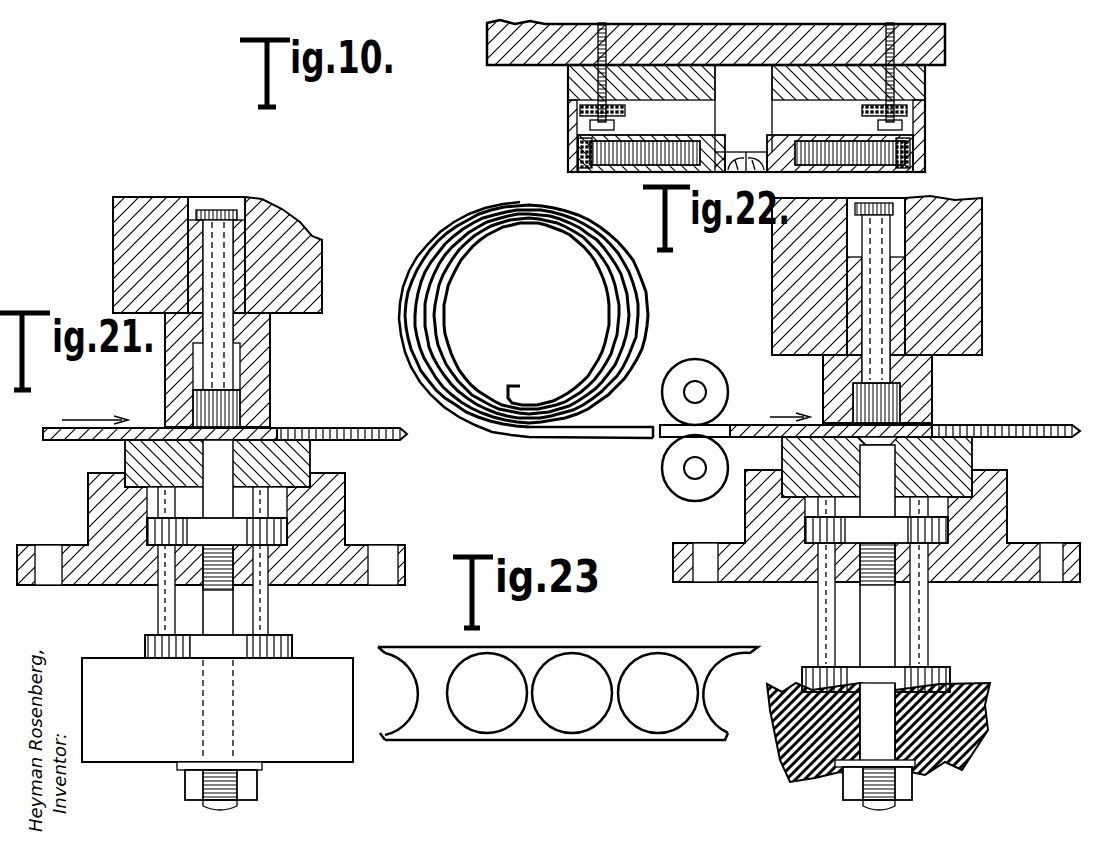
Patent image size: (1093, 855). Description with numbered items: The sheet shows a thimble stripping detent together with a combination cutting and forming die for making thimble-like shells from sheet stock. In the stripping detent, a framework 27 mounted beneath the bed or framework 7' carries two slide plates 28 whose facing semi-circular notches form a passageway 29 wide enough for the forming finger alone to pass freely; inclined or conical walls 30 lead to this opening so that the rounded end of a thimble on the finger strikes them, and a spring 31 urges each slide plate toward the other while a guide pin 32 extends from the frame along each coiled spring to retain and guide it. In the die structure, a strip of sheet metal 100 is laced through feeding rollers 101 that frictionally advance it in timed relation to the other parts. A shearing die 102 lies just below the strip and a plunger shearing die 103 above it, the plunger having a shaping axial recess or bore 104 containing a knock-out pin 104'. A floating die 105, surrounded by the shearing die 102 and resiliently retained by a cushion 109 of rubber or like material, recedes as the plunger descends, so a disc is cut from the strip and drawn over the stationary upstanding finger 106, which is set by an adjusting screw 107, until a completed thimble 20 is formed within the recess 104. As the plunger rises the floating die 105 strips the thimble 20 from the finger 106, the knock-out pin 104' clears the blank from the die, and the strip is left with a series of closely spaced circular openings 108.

In FIG. 10, the bed or framework 7' is at (734, 42).
In FIG. 10, the framework 27 is at (910, 108).
In FIG. 10, the slide plates 28 is at (735, 172).
In FIG. 10, the passageway or opening 29 is at (740, 152).
In FIG. 10, the inclined or conical walls 30 is at (750, 152).
In FIG. 10, the spring 31 is at (600, 170).
In FIG. 10, the guide pin 32 is at (575, 170).
In FIG. 21, the strip of sheet metal 100 is at (52, 430).
In FIG. 22, the strip of sheet metal 100 is at (652, 278).
In FIG. 23, the strip of sheet metal 100 is at (532, 653).
In FIG. 22, the feeding rollers 101 is at (712, 398).
In FIG. 21, the shearing die 102 is at (295, 478).
In FIG. 22, the shearing die 102 is at (965, 480).
In FIG. 21, the plunger shearing die 103 is at (255, 362).
In FIG. 22, the plunger shearing die 103 is at (928, 363).
In FIG. 21, the shaping axial recess or bore 104 is at (257, 304).
In FIG. 22, the shaping axial recess or bore 104 is at (834, 313).
In FIG. 21, the knock-out pin 104' is at (169, 407).
In FIG. 22, the knock-out pin 104' is at (932, 403).
In FIG. 21, the floating die 105 is at (125, 465).
In FIG. 22, the floating die 105 is at (790, 492).
In FIG. 21, the upstanding finger 106 is at (218, 588).
In FIG. 22, the upstanding finger 106 is at (876, 604).
In FIG. 21, the adjusting screw 107 is at (222, 603).
In FIG. 22, the adjusting screw 107 is at (875, 603).
In FIG. 21, the circular openings 108 is at (345, 426).
In FIG. 22, the circular openings 108 is at (1000, 432).
In FIG. 23, the circular openings 108 is at (420, 668).
In FIG. 21, the cushion 109 is at (315, 750).
In FIG. 22, the cushion 109 is at (975, 680).
In FIG. 22, the thimble 20 is at (895, 453).